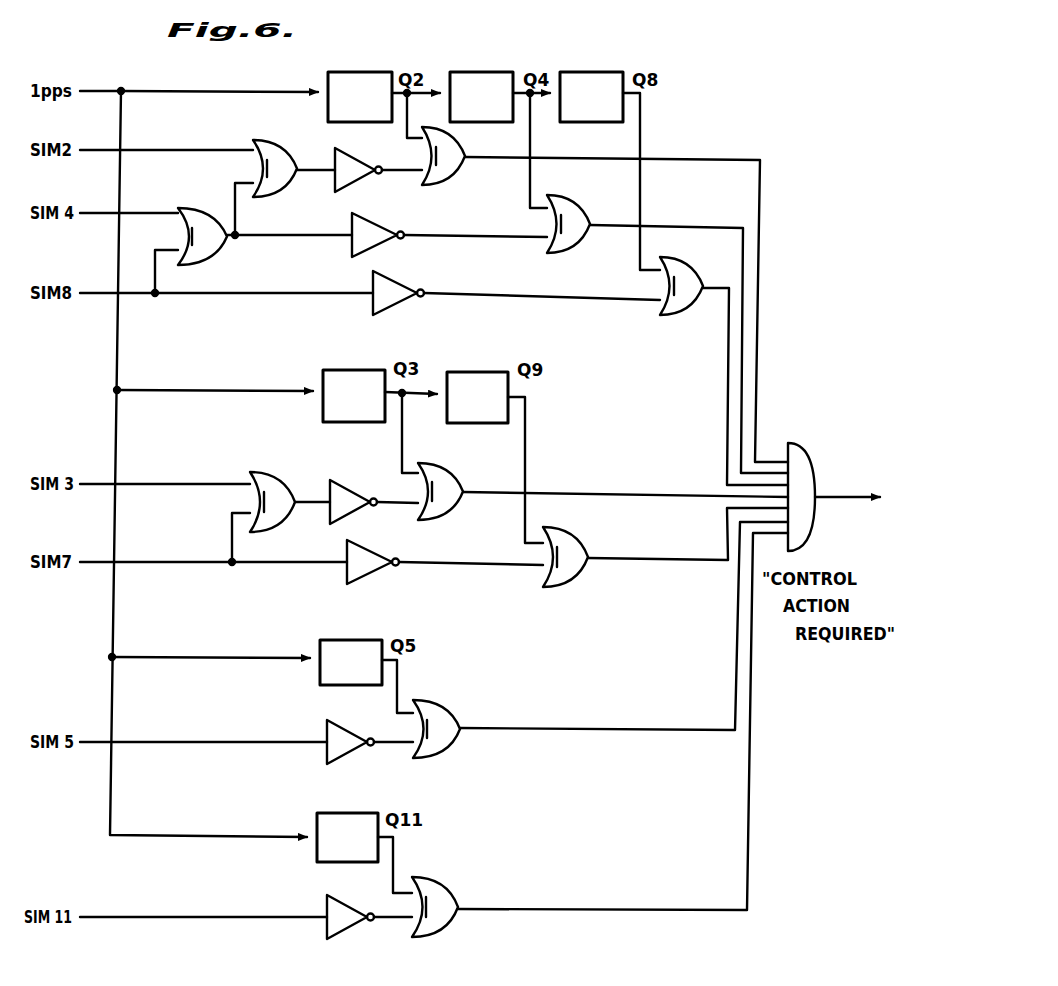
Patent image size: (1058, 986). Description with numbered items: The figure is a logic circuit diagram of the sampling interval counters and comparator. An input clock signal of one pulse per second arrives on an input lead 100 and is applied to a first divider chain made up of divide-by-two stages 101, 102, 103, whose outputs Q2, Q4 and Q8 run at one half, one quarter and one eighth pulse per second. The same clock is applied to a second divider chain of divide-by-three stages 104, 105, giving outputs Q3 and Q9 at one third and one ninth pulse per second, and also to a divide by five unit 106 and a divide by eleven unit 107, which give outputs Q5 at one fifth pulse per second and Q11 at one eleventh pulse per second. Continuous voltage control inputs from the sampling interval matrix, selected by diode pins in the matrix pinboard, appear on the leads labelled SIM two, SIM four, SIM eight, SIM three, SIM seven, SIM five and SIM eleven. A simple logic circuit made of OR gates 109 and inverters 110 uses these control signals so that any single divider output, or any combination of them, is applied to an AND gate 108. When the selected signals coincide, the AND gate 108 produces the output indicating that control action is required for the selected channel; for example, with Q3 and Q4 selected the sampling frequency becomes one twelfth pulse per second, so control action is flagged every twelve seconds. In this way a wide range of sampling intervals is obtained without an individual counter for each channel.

The input lead 100 is at (103, 91).
The divide-by-two stage 101 is at (369, 72).
The divide-by-two stage 102 is at (479, 72).
The divide-by-two stage 103 is at (592, 72).
The divide-by-3 stage 104 is at (357, 370).
The divide-by-3 stage 105 is at (473, 372).
The divide by 5 unit 106 is at (337, 640).
The divide by 11 unit 107 is at (347, 812).
The AND gate 108 is at (796, 443).
The OR gates 109 is at (278, 133).
The inverters 110 is at (381, 213).